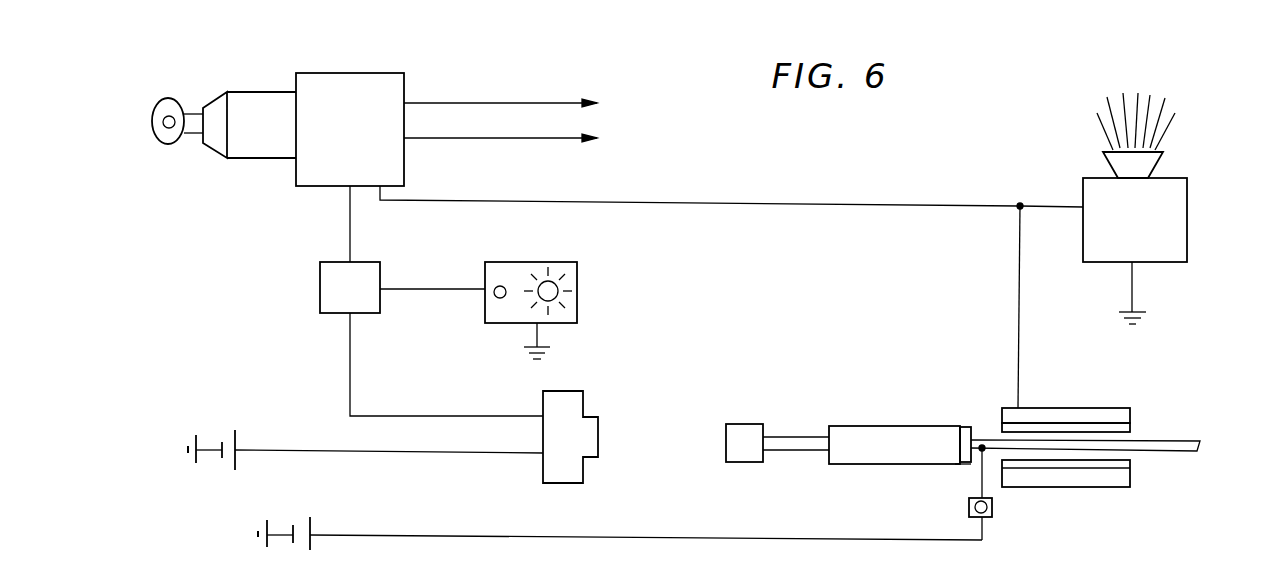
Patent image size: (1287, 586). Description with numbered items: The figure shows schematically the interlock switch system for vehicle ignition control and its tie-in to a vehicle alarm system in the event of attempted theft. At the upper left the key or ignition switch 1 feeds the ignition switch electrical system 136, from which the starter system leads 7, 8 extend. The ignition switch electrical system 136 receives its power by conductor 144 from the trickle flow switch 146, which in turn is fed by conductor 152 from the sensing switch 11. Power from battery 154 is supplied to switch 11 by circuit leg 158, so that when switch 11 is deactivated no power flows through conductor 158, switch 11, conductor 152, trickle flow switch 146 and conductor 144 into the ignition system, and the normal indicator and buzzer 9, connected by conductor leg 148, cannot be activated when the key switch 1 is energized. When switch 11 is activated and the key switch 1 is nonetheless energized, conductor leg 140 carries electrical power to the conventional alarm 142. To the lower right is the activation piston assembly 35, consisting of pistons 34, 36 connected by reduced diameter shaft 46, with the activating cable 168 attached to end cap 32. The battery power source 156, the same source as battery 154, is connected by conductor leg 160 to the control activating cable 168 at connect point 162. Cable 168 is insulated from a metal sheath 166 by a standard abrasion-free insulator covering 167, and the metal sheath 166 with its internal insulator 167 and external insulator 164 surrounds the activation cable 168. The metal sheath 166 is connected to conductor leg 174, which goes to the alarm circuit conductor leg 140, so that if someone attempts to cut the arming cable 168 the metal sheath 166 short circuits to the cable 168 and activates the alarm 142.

The ignition switch 1 is at (243, 93).
The ignition switch electrical system 136 is at (349, 74).
The starter system lead 7 is at (470, 103).
The starter system lead 8 is at (505, 138).
The indicator and buzzer 9 is at (577, 262).
The sensing switch 11 is at (583, 391).
The conductor leg 140 is at (803, 204).
The alarm 142 is at (1187, 193).
The conductor 144 is at (350, 242).
The trickle flow switch 146 is at (320, 265).
The conductor leg 148 is at (458, 288).
The conductor 152 is at (350, 365).
The battery 154 is at (228, 430).
The battery power source 156 is at (303, 517).
The circuit leg 158 is at (458, 455).
The conductor leg 160 is at (672, 535).
The connect point 162 is at (990, 520).
The external insulator 164 is at (1110, 487).
The metal sheath 166 is at (1080, 408).
The insulator covering 167 is at (1135, 425).
The activation cable 168 is at (1172, 441).
The conductor leg 174 is at (1018, 298).
The end cap 32 is at (960, 466).
The piston 34 is at (888, 426).
The activation piston assembly 35 is at (967, 427).
The piston 36 is at (740, 424).
The reduced diameter shaft 46 is at (800, 437).